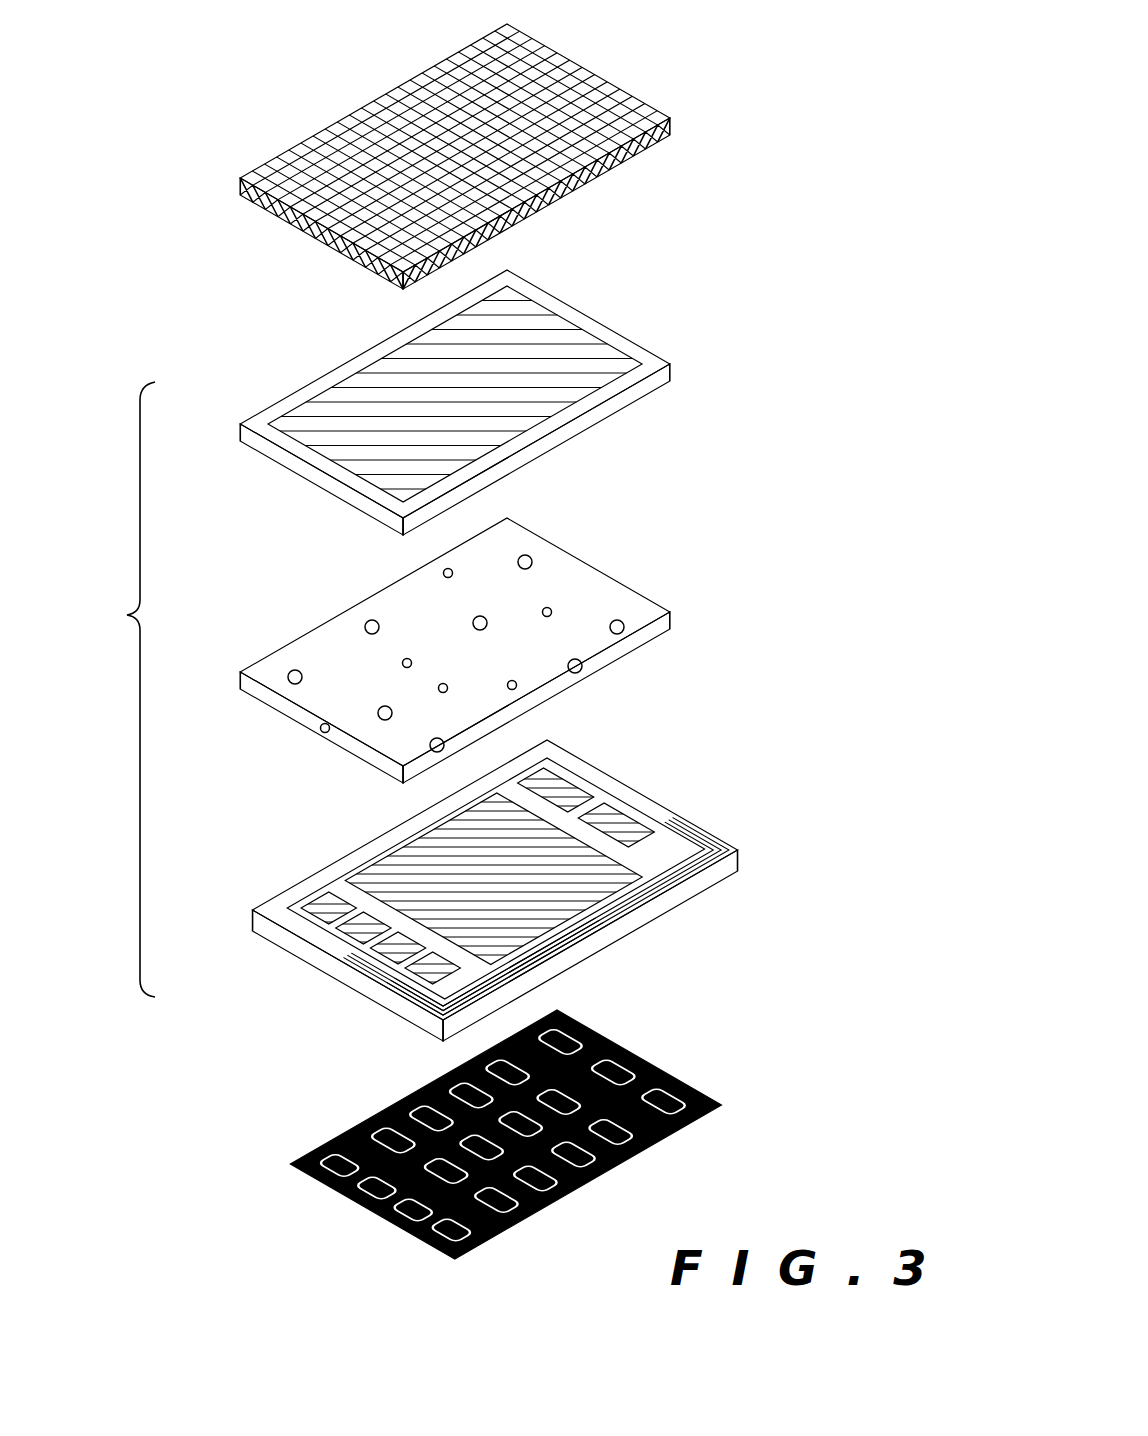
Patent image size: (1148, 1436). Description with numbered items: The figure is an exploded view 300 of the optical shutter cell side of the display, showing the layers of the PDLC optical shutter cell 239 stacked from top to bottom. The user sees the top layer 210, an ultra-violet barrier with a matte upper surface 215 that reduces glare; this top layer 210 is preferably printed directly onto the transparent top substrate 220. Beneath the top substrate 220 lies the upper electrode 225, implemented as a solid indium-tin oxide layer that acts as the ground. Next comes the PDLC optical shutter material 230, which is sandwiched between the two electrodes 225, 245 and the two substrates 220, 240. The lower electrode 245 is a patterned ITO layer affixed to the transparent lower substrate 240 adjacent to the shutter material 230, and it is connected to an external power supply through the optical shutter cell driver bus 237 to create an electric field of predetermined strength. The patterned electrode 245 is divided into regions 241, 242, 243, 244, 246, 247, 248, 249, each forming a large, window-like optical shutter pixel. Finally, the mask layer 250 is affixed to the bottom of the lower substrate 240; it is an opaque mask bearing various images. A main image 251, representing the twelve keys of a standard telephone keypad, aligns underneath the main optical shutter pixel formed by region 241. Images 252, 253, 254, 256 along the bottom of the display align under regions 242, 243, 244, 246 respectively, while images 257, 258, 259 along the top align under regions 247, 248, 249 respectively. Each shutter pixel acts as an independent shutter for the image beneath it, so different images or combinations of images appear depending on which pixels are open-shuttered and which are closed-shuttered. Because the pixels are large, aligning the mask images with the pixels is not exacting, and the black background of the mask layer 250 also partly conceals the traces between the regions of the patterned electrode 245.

The top layer 210 is at (463, 156).
The matte upper surface 215 is at (416, 84).
The top substrate 220 is at (463, 402).
The upper electrode 225 is at (586, 331).
The PDLC optical shutter material 230 is at (594, 582).
The optical shutter cell driver bus 237 is at (535, 904).
The PDLC optical shutter cell 239 is at (110, 689).
The lower substrate 240 is at (498, 878).
The region 241 is at (493, 879).
The region 242 is at (328, 908).
The region 243 is at (363, 928).
The region 244 is at (397, 948).
The lower electrode 245 is at (495, 878).
The region 246 is at (432, 968).
The region 247 is at (556, 790).
The region 248 is at (616, 825).
The region 249 is at (495, 952).
The mask layer 250 is at (508, 1138).
The main image 251 is at (507, 1073).
The image 252 is at (339, 1165).
The image 253 is at (376, 1188).
The image 254 is at (413, 1210).
The image 256 is at (451, 1230).
The image 257 is at (560, 1042).
The image 258 is at (613, 1073).
The image 259 is at (663, 1102).
The exploded view 300 is at (150, 1096).